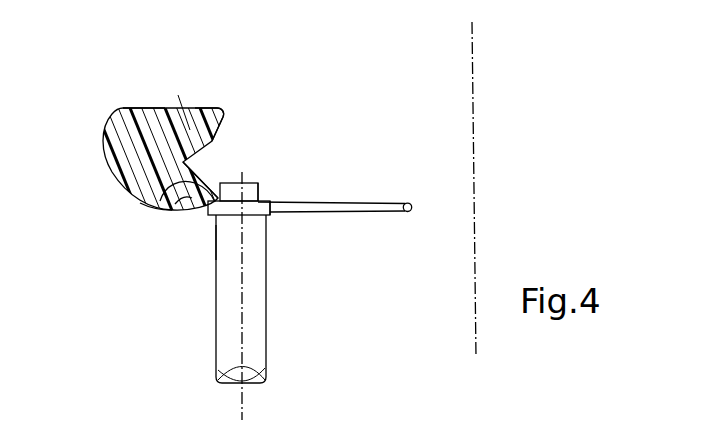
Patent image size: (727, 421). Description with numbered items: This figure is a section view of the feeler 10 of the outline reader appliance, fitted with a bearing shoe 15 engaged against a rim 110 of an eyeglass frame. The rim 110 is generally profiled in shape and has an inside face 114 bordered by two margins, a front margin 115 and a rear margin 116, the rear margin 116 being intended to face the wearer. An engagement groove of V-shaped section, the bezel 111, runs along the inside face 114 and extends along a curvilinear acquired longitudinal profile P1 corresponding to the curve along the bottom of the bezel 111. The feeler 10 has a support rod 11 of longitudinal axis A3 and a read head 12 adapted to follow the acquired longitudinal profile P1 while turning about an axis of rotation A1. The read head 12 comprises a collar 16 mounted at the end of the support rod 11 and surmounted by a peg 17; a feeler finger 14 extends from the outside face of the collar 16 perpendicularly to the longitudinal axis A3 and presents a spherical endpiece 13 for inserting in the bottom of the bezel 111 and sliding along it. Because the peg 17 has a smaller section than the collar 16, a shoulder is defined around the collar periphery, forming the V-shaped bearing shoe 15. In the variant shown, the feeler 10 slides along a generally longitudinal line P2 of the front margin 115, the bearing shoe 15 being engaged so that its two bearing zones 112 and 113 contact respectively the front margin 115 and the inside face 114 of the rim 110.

The feeler 10 is at (352, 146).
The support rod 11 is at (253, 299).
The read head 12 is at (271, 208).
The spherical endpiece 13 is at (408, 214).
The feeler finger 14 is at (348, 236).
The bearing shoe 15 is at (168, 207).
The collar 16 is at (277, 208).
The peg 17 is at (258, 181).
The rim 110 is at (103, 114).
The bezel 111 is at (212, 143).
The bearing zone 112 is at (216, 238).
The bearing zone 113 is at (215, 180).
The inside face 114 is at (221, 109).
The front margin 115 is at (193, 205).
The rear margin 116 is at (148, 108).
The acquired longitudinal profile P1 is at (176, 100).
The generally longitudinal line P2 is at (178, 211).
The axis of rotation A1 is at (473, 63).
The longitudinal axis A3 is at (245, 405).